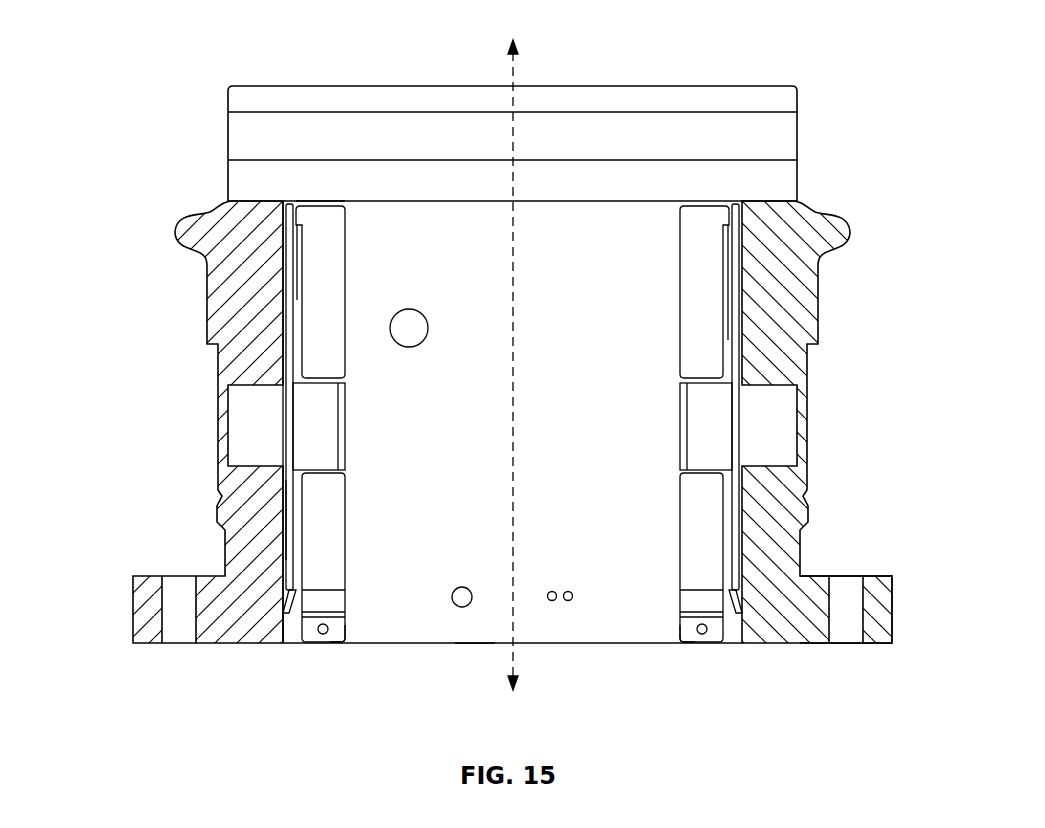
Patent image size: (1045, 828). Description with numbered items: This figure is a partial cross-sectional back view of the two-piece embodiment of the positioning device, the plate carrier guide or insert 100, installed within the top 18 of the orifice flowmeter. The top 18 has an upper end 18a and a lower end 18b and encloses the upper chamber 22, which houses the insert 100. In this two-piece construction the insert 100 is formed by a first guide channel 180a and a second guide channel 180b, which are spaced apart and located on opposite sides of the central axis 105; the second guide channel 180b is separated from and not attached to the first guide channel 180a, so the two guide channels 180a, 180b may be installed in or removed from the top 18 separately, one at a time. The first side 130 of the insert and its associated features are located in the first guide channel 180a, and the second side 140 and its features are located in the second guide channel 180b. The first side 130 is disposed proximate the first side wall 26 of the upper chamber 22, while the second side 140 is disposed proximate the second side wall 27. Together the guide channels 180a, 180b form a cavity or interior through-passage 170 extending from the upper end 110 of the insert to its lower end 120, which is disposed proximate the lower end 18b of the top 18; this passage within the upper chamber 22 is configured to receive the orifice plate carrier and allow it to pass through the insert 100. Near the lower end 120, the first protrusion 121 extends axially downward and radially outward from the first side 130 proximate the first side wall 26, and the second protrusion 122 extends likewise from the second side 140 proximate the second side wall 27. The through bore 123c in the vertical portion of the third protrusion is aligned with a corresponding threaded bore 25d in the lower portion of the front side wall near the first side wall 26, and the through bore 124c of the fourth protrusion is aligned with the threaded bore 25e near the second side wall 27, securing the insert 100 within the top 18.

The top 18 is at (714, 33).
The upper end 18a is at (738, 85).
The lower end 18b is at (843, 644).
The central axis 105 is at (506, 63).
The upper end 110 is at (338, 188).
The insert 100 is at (270, 246).
The second side wall 27 is at (284, 293).
The second side 140 is at (290, 355).
The upper chamber 22 is at (288, 520).
The first guide channel 180a is at (318, 503).
The second guide channel 180b is at (713, 298).
The first side wall 26 is at (740, 338).
The first side 130 is at (737, 522).
The second protrusion 122 is at (296, 600).
The first protrusion 121 is at (728, 602).
The through bore 124c is at (323, 636).
The through bore 123c is at (703, 636).
The threaded bore 25e is at (349, 652).
The threaded bore 25d is at (676, 652).
The lower end 120 is at (277, 646).
The through-passage 170 is at (471, 659).